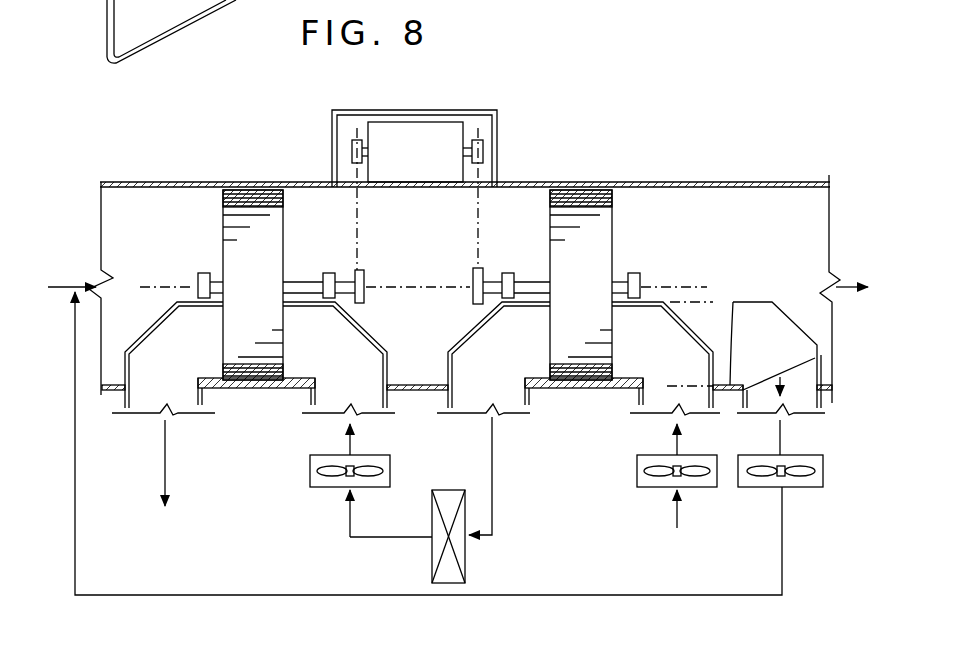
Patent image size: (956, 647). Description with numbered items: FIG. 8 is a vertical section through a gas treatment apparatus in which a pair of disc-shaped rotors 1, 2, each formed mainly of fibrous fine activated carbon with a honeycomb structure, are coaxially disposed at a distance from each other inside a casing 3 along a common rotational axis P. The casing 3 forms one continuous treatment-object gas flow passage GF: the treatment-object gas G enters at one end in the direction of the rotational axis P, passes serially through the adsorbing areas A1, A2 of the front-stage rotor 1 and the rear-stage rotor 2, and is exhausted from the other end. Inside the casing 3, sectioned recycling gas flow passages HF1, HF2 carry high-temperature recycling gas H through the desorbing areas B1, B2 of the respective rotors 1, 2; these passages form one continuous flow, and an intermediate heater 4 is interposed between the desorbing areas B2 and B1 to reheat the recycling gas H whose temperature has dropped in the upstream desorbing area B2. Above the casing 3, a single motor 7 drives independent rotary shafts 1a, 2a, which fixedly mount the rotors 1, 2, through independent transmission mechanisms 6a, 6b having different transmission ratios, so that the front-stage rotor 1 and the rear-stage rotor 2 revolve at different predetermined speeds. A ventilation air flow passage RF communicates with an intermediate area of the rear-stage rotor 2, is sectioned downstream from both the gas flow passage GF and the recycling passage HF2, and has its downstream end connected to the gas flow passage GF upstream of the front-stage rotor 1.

The front-stage rotor 1 is at (220, 276).
The rotary shaft 1a is at (303, 280).
The rear-stage rotor 2 is at (552, 299).
The rotary shaft 2a is at (620, 280).
The casing 3 is at (705, 182).
The intermediate heater 4 is at (467, 560).
The transmission mechanism 6a is at (348, 158).
The transmission mechanism 6b is at (487, 148).
The motor 7 is at (457, 122).
The adsorbing area A1 is at (221, 240).
The adsorbing area A2 is at (548, 238).
The desorbing area B1 is at (221, 343).
The desorbing area B2 is at (548, 336).
The recycling gas flow passage HF1 is at (335, 355).
The recycling gas flow passage HF2 is at (662, 355).
The treatment-object gas flow passage GF is at (793, 315).
The rotational axis P is at (150, 285).
The treatment-object gas G is at (415, 422).
The recycling gas H is at (677, 494).
The ventilation air flow passage RF is at (783, 524).